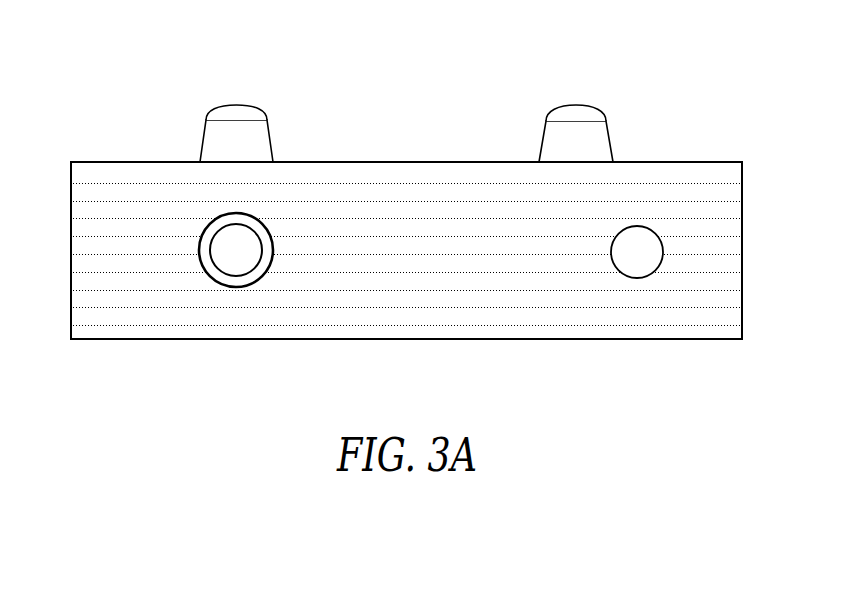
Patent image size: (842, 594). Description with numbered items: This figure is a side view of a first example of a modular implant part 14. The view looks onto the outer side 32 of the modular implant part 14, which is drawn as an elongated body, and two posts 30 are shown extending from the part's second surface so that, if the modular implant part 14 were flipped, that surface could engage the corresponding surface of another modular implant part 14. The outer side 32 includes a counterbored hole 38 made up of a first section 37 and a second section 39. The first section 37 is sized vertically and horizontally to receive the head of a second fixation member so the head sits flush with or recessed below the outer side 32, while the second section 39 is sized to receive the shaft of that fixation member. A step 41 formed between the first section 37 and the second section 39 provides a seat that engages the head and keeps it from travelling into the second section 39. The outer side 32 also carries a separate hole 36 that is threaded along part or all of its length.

The modular implant part 14 is at (410, 203).
The posts 30 is at (238, 102).
The outer side 32 is at (728, 250).
The hole 36 is at (613, 260).
The first section 37 is at (275, 254).
The counterbored hole 38 is at (176, 251).
The second section 39 is at (213, 250).
The step 41 is at (210, 238).